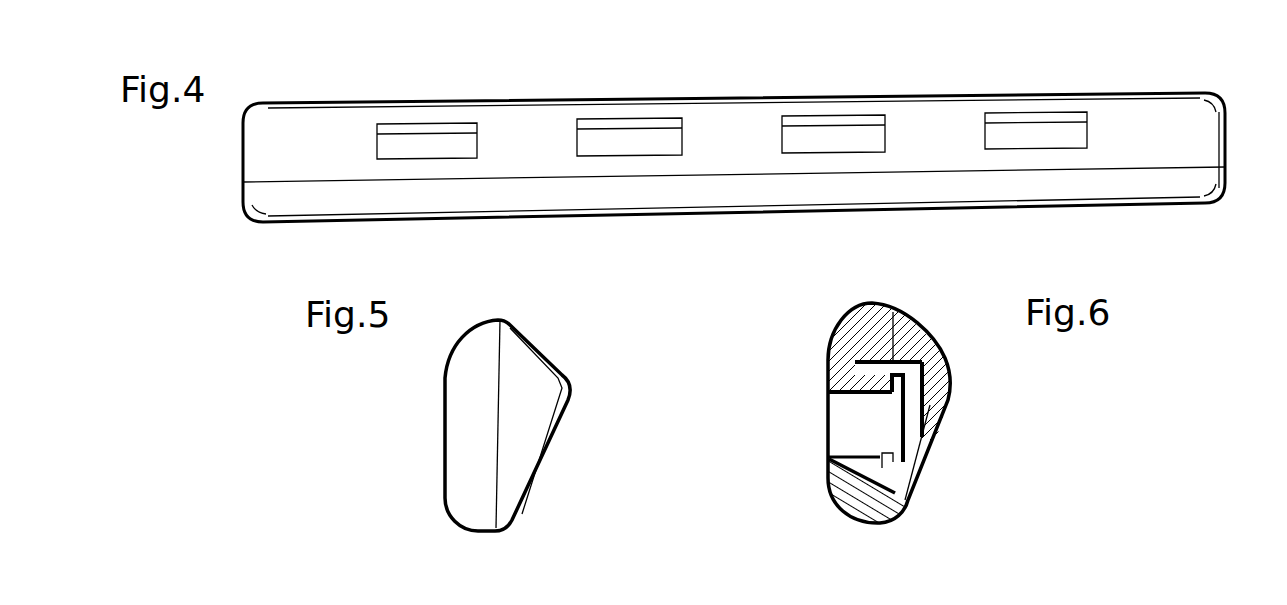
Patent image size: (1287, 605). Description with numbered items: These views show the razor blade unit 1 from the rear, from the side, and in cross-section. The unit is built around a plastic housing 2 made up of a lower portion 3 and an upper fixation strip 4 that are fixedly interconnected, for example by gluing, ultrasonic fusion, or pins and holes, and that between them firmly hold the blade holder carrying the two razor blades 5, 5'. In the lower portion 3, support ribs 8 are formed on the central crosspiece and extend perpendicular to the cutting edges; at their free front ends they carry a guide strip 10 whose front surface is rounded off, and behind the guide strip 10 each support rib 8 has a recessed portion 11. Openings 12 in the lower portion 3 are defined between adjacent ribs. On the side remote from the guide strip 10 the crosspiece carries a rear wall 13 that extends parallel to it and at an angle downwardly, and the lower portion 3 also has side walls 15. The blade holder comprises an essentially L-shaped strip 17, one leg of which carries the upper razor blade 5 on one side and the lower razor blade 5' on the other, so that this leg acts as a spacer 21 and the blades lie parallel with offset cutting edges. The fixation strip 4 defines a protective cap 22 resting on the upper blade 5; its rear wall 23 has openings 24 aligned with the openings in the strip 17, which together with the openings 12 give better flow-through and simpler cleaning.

In FIG. 4, the razor blade unit 1 is at (709, 152).
In FIG. 5, the razor blade unit 1 is at (438, 412).
In FIG. 6, the razor blade unit 1 is at (824, 461).
In FIG. 4, the plastic housing 2 is at (1228, 125).
In FIG. 5, the plastic housing 2 is at (500, 318).
In FIG. 6, the plastic housing 2 is at (880, 320).
In FIG. 4, the lower portion 3 is at (1220, 200).
In FIG. 5, the lower portion 3 is at (467, 345).
In FIG. 6, the lower portion 3 is at (837, 382).
In FIG. 4, the fixation strip 4 is at (1212, 100).
In FIG. 5, the fixation strip 4 is at (549, 370).
In FIG. 6, the fixation strip 4 is at (925, 338).
In FIG. 6, the upper razor blade 5 is at (942, 418).
In FIG. 4, the lower razor blade 5' is at (1036, 97).
In FIG. 6, the lower razor blade 5' is at (936, 443).
In FIG. 6, the support ribs 8 is at (884, 462).
In FIG. 5, the guide strip 10 is at (467, 527).
In FIG. 6, the guide strip 10 is at (862, 503).
In FIG. 6, the recessed portion 11 is at (908, 497).
In FIG. 6, the openings 12 is at (838, 423).
In FIG. 4, the rear wall 13 is at (937, 192).
In FIG. 6, the rear wall 13 is at (857, 332).
In FIG. 4, the side walls 15 is at (246, 207).
In FIG. 6, the strip 17 is at (907, 343).
In FIG. 6, the spacer 21 is at (930, 427).
In FIG. 4, the protective cap 22 is at (637, 112).
In FIG. 6, the protective cap 22 is at (942, 360).
In FIG. 4, the rear wall 23 is at (725, 115).
In FIG. 6, the rear wall 23 is at (872, 340).
In FIG. 4, the openings 24 is at (455, 143).
In FIG. 6, the openings 24 is at (917, 337).